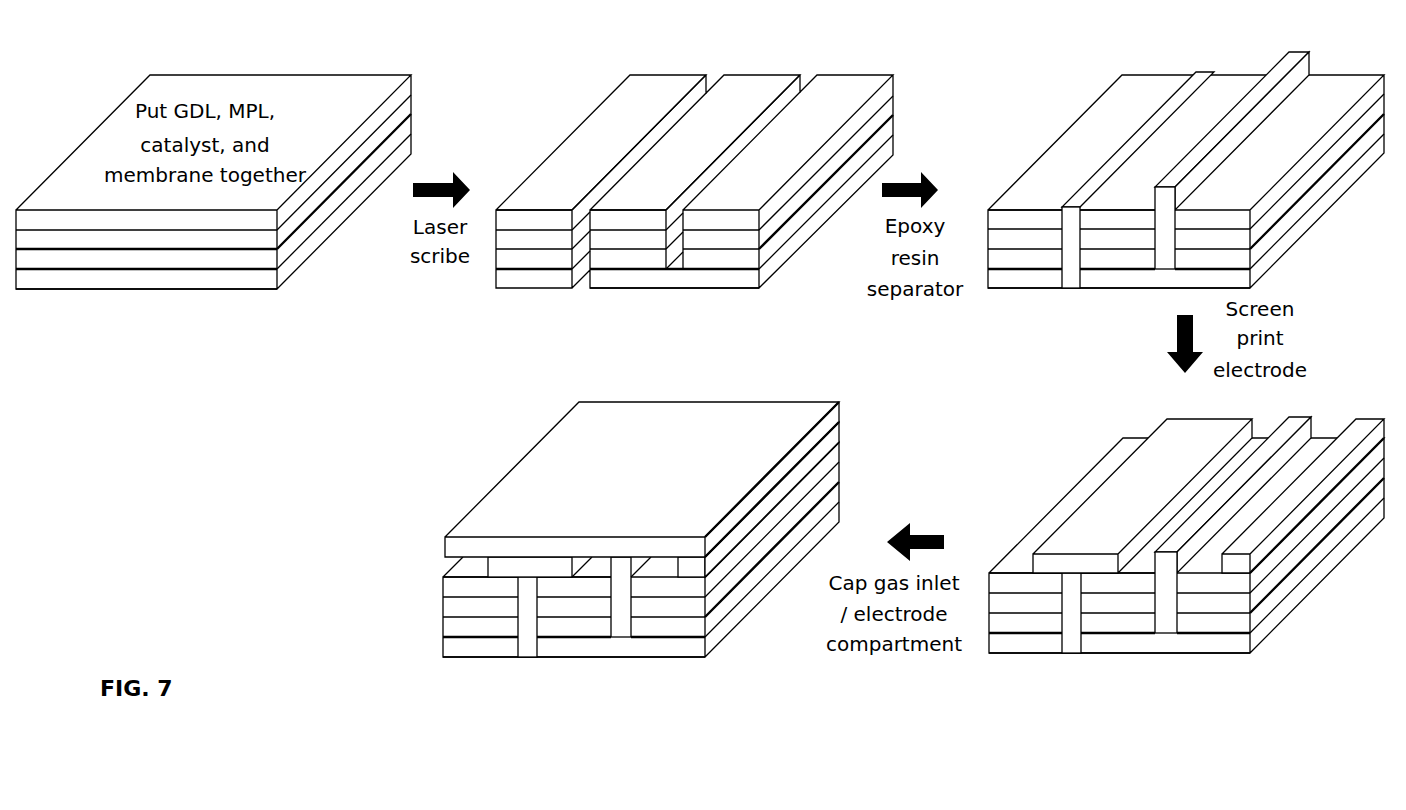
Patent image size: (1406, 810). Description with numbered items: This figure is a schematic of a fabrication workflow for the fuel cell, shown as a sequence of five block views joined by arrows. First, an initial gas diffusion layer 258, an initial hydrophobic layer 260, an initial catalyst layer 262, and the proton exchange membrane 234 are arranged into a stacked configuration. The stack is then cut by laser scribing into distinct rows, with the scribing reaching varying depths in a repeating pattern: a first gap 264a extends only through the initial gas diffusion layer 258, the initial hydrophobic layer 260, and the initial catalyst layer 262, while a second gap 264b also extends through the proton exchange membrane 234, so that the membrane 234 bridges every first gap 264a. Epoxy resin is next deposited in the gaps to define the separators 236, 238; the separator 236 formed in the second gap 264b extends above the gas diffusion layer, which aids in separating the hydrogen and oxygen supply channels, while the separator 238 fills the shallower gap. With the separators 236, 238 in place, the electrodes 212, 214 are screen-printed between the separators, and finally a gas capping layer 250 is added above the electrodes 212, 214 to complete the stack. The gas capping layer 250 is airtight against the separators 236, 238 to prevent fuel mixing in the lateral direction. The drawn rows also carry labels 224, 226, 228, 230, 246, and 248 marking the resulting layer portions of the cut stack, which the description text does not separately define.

The electrode 212 is at (1110, 490).
The electrode 214 is at (1164, 490).
The first electrode portion 224 is at (557, 200).
The second electrode portion 226 is at (643, 188).
The first gas diffusion layer 228 is at (518, 270).
The second gas diffusion layer 230 is at (621, 270).
The proton exchange membrane 234 is at (241, 289).
The separator 236 is at (1243, 115).
The separator 238 is at (1147, 125).
The first catalyst layer 246 is at (548, 250).
The second catalyst layer 248 is at (650, 250).
The gas capping layer 250 is at (508, 493).
The initial gas diffusion layer 258 is at (70, 230).
The initial hydrophobic layer 260 is at (124, 250).
The initial catalyst layer 262 is at (188, 269).
The first gap 264a is at (722, 161).
The second gap 264b is at (644, 146).